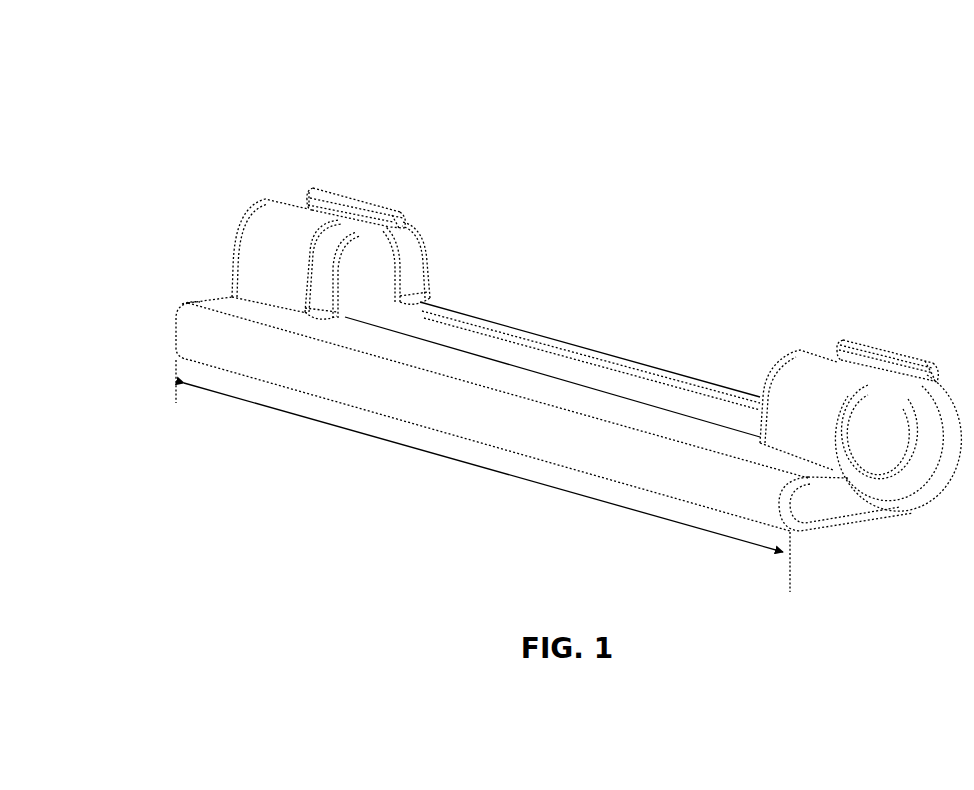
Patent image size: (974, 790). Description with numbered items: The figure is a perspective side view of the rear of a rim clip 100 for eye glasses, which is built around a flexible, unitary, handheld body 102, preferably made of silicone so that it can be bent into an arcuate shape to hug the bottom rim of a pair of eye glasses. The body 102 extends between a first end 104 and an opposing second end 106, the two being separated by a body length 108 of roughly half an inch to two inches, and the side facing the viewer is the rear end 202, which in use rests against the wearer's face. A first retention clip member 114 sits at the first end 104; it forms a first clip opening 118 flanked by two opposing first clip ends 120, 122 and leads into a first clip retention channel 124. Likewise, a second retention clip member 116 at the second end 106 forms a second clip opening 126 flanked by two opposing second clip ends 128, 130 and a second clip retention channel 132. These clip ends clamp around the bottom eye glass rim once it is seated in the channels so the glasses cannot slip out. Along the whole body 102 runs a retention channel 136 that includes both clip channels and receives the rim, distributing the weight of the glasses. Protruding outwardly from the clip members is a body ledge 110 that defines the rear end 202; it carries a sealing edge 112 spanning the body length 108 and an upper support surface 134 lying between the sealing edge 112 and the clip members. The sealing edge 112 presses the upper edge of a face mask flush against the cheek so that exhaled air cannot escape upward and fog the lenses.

The rim clip 100 is at (517, 180).
The body 102 is at (567, 345).
The first end 104 is at (217, 296).
The second end 106 is at (828, 494).
The body length 108 is at (342, 429).
The body ledge 110 is at (196, 330).
The sealing edge 112 is at (498, 417).
The first retention clip member 114 is at (253, 253).
The second retention clip member 116 is at (810, 392).
The first clip opening 118 is at (340, 212).
The first clip end 120 is at (380, 215).
The first clip end 122 is at (295, 204).
The first clip retention channel 124 is at (367, 269).
The second clip opening 126 is at (871, 361).
The second clip end 128 is at (821, 354).
The second clip end 130 is at (906, 363).
The second clip retention channel 132 is at (898, 443).
The upper support surface 134 is at (678, 427).
The retention channel 136 is at (612, 386).
The rear end 202 is at (186, 303).